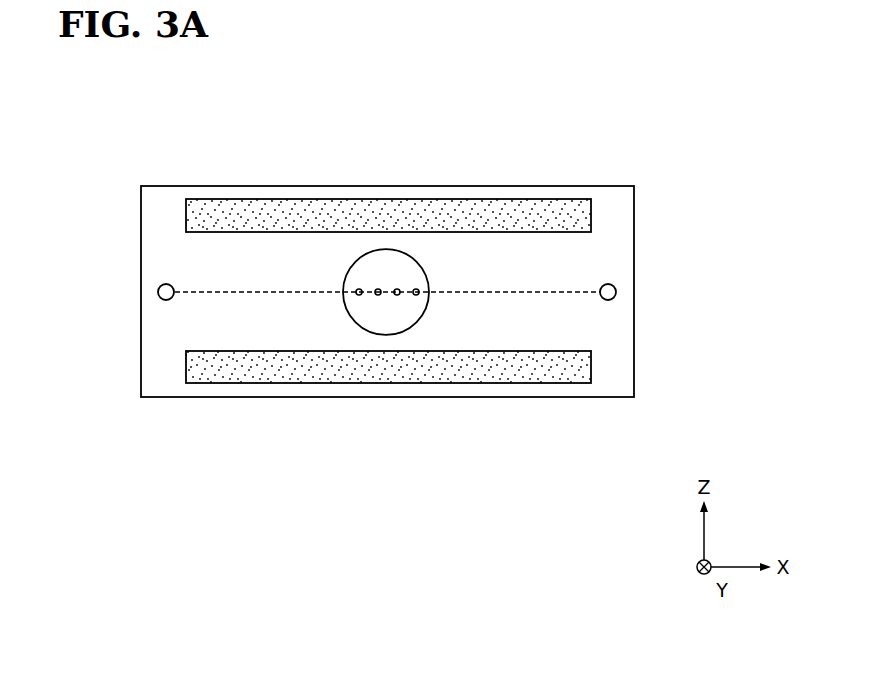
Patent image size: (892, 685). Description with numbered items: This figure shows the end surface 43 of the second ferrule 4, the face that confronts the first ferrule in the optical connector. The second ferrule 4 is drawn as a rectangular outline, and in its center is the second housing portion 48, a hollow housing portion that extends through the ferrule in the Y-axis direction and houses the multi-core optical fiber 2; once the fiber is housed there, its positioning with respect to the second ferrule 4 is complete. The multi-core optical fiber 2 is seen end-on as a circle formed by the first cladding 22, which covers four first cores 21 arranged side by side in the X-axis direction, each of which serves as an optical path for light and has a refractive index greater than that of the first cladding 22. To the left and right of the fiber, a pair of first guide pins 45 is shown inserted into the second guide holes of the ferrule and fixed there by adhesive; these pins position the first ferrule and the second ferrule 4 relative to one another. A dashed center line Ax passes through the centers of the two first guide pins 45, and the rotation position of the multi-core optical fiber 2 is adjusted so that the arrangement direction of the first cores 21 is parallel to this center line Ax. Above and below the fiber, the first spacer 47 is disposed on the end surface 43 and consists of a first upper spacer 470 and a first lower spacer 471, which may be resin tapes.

The multi-core optical fiber 2 is at (378, 292).
The second ferrule 4 is at (394, 282).
The first cores 21 is at (359, 296).
The first cladding 22 is at (370, 262).
The end surface 43 is at (634, 219).
The first guide pins 45 is at (158, 292).
The first spacer 47 is at (388, 287).
The second housing portion 48 is at (403, 320).
The first upper spacer 470 is at (539, 199).
The first lower spacer 471 is at (539, 383).
The center line Ax is at (487, 292).